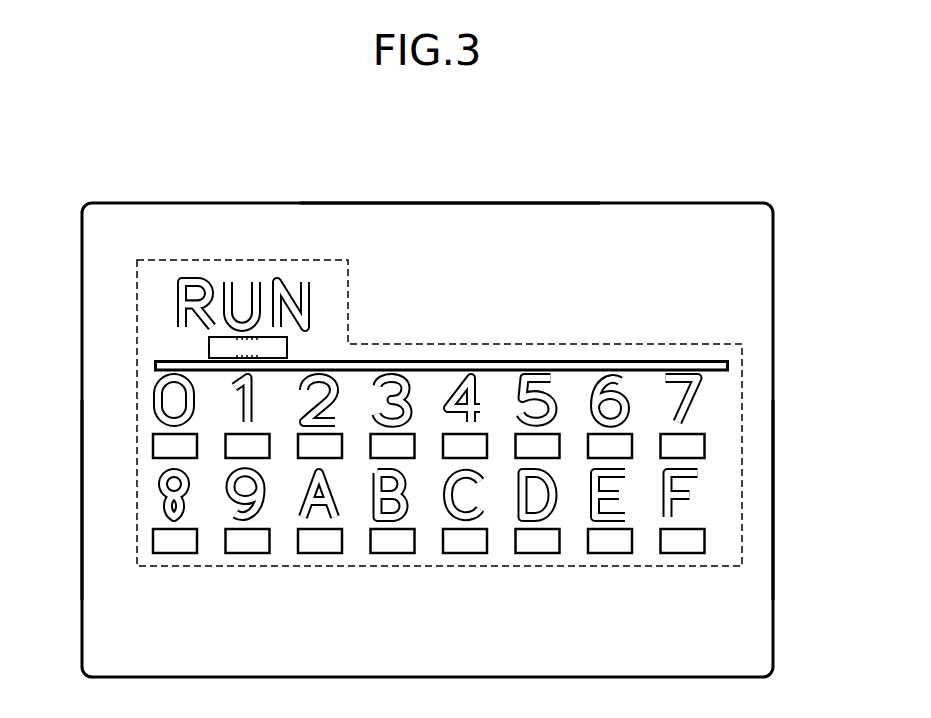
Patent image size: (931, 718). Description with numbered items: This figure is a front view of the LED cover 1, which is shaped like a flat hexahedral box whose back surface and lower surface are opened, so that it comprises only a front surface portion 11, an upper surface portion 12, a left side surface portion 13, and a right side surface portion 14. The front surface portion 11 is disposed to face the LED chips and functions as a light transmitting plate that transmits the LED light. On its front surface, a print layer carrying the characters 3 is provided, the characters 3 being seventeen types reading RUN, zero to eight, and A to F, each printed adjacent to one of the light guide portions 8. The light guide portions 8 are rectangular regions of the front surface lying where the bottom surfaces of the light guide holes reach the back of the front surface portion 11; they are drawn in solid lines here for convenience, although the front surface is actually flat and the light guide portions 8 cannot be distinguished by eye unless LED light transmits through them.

The LED cover 1 is at (565, 194).
The characters 3 is at (136, 400).
The light guide portions 8 is at (704, 447).
The front surface portion 11 is at (234, 228).
The upper surface portion 12 is at (462, 203).
The left side surface portion 13 is at (82, 501).
The right side surface portion 14 is at (773, 555).